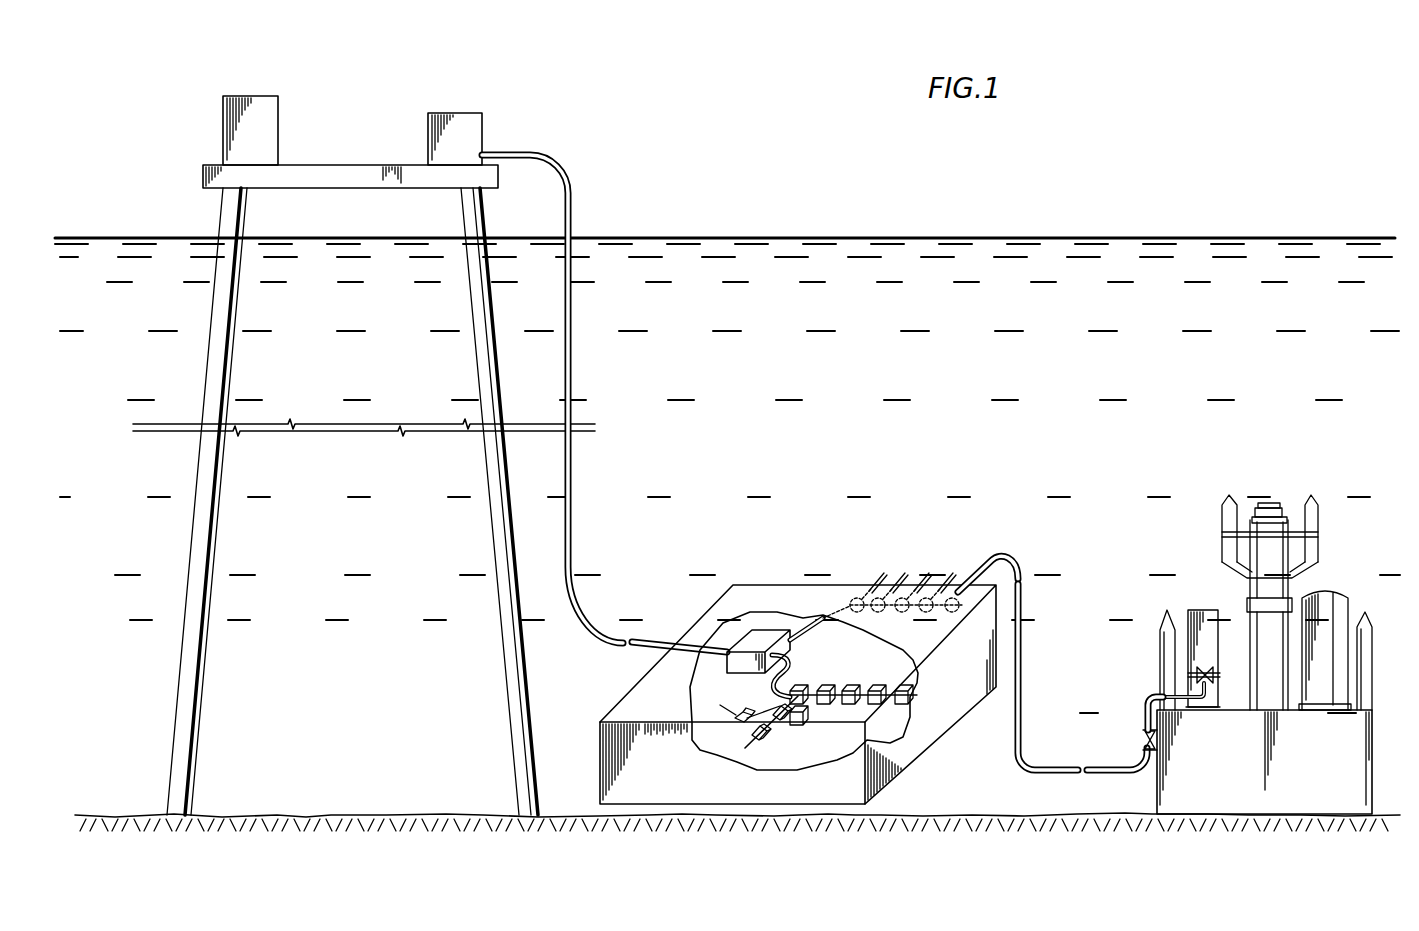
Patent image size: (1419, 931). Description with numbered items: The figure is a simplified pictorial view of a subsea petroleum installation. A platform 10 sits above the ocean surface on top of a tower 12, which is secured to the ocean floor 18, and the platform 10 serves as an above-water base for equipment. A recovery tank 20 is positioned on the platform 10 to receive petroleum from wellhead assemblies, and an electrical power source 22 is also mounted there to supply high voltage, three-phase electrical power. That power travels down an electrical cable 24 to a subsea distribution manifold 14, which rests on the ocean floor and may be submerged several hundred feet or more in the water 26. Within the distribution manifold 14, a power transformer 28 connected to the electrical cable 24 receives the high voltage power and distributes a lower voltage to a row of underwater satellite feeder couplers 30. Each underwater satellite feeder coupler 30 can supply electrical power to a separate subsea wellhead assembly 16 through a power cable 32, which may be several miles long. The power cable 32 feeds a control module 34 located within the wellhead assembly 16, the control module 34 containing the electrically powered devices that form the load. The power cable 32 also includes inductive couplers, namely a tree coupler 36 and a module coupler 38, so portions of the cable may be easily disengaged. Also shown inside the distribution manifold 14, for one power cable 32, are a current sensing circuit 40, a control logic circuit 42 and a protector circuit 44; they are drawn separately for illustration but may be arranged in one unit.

The platform 10 is at (205, 167).
The tower 12 is at (218, 223).
The subsea distribution manifold 14 is at (733, 568).
The subsea wellhead assembly 16 is at (1360, 592).
The ocean floor 18 is at (375, 814).
The recovery tank 20 is at (232, 115).
The electrical power source 22 is at (432, 133).
The electrical cable 24 is at (561, 185).
The water 26 is at (851, 332).
The power transformer 28 is at (750, 633).
The underwater satellite feeder couplers 30 is at (849, 600).
The power cable 32 is at (1026, 623).
The control module 34 is at (1203, 609).
The tree coupler 36 is at (1145, 739).
The module coupler 38 is at (1211, 669).
The current sensing circuit 40 is at (782, 720).
The control logic circuit 42 is at (740, 716).
The protector circuit 44 is at (760, 746).